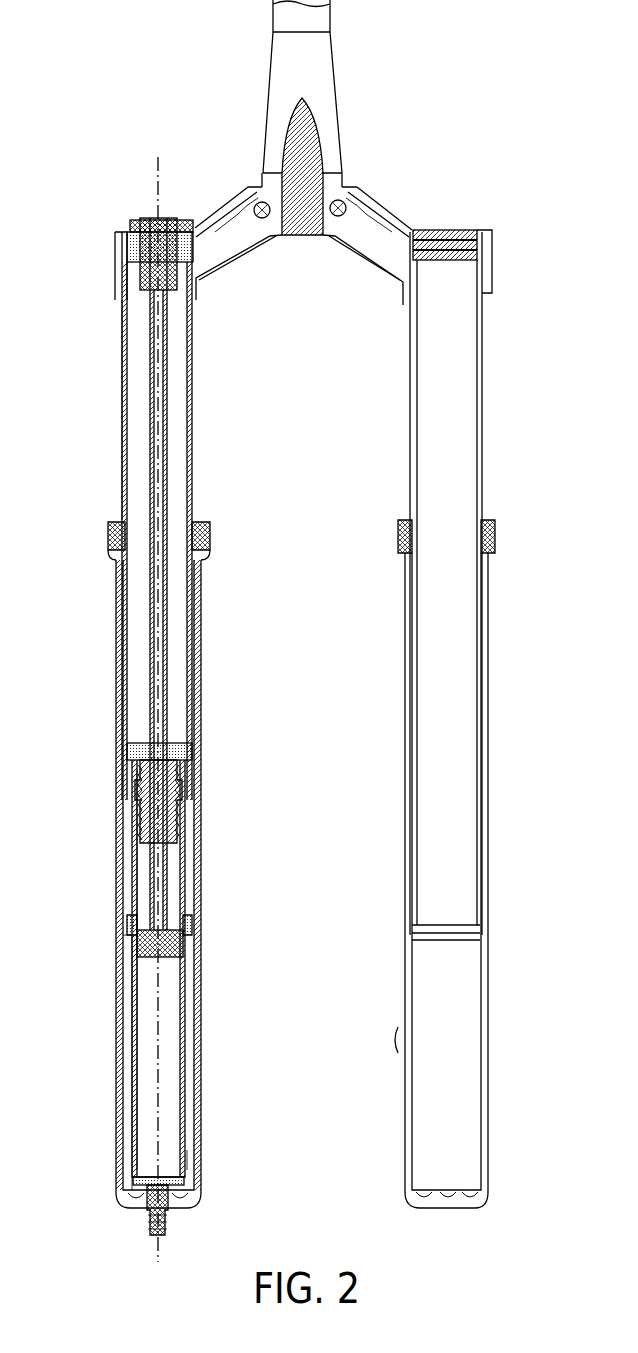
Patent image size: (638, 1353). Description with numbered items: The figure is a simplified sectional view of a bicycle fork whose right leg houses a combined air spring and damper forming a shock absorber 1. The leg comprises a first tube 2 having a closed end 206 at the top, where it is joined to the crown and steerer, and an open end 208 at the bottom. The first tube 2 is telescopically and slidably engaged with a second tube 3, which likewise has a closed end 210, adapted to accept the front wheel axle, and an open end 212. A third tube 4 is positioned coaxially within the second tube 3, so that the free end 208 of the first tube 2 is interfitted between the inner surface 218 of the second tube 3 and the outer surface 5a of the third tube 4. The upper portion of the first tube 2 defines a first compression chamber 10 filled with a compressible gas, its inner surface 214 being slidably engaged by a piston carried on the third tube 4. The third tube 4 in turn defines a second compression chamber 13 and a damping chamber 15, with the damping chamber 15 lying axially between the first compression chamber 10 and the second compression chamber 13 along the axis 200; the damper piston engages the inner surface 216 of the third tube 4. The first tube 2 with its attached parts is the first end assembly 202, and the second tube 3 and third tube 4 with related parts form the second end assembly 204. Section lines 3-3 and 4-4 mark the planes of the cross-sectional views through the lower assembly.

The shock absorber 1 is at (421, 162).
The first tube 2 is at (175, 474).
The second tube 3 is at (169, 1050).
The third tube 4 is at (166, 926).
The outer surface of the third tube 5a is at (128, 1143).
The first compression chamber 10 is at (188, 432).
The second compression chamber 13 is at (170, 1083).
The damping chamber 15 is at (175, 860).
The axis 200 is at (160, 163).
The first end assembly 202 is at (210, 486).
The second end assembly 204 is at (215, 1100).
The closed end of the first tube 206 is at (123, 203).
The open end of the first tube 208 is at (113, 957).
The closed end of the second tube 210 is at (131, 1228).
The open end of the second tube 212 is at (222, 539).
The inner surface of the first tube 214 is at (124, 462).
The inner surface of the third tube 216 is at (176, 1046).
The inner surface of the second tube 218 is at (190, 1156).
The section line 3-3 is at (190, 930).
The section line 4-4 is at (188, 747).